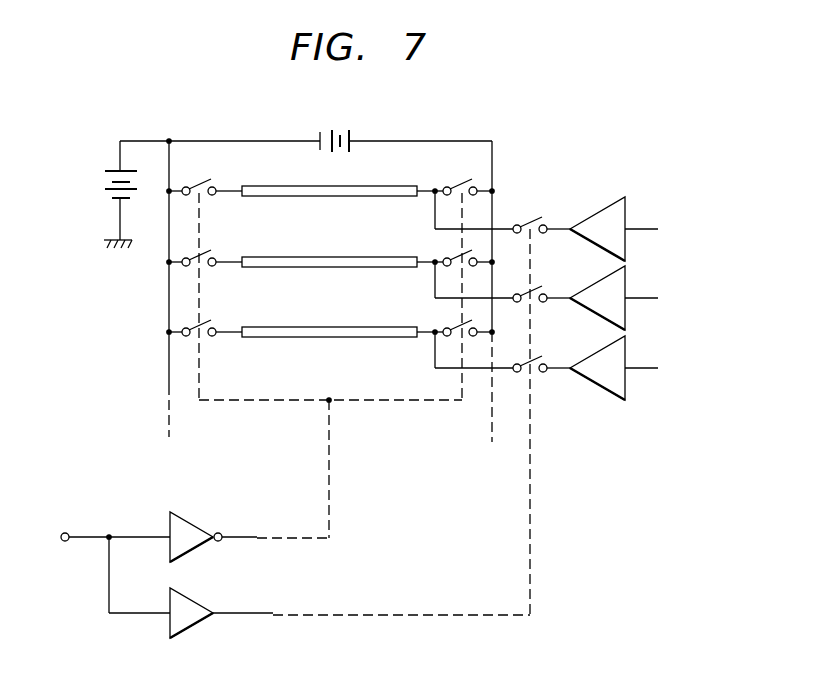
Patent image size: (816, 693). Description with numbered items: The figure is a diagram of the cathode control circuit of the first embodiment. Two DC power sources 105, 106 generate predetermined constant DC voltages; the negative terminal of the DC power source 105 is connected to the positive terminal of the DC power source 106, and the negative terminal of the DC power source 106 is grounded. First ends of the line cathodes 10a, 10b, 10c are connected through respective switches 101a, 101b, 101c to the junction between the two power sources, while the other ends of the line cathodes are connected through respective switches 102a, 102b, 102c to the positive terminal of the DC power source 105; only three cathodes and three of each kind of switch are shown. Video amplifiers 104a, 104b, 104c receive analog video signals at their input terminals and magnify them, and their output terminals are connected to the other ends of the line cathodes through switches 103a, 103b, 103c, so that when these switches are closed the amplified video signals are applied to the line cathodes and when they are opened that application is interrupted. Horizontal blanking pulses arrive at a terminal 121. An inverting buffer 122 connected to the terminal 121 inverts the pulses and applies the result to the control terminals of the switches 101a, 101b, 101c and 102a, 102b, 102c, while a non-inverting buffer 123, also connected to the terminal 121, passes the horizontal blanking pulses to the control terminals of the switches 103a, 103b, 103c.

The line cathode 10a is at (302, 186).
The line cathode 10b is at (306, 257).
The line cathode 10c is at (304, 327).
The switch 101a is at (197, 183).
The switch 101b is at (205, 254).
The switch 101c is at (205, 324).
The switch 102a is at (456, 186).
The switch 102b is at (456, 256).
The switch 102c is at (456, 325).
The switch 103a is at (533, 222).
The switch 103b is at (535, 293).
The switch 103c is at (535, 363).
The video amplifier 104a is at (602, 213).
The video amplifier 104b is at (628, 272).
The video amplifier 104c is at (628, 348).
The DC power source 105 is at (337, 129).
The DC power source 106 is at (102, 189).
The terminal 121 is at (65, 531).
The inverting buffer 122 is at (193, 522).
The non-inverting buffer 123 is at (190, 596).